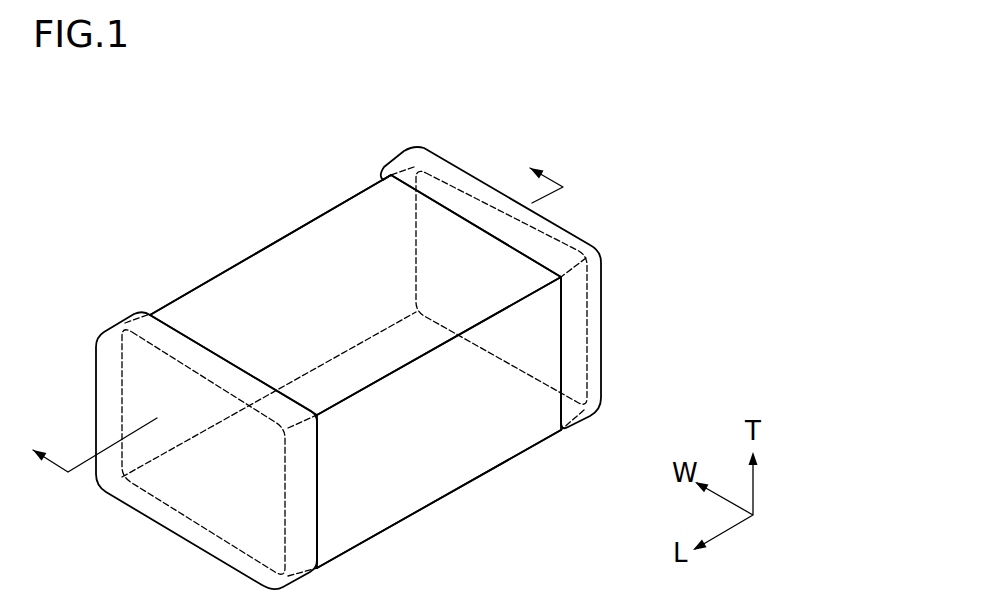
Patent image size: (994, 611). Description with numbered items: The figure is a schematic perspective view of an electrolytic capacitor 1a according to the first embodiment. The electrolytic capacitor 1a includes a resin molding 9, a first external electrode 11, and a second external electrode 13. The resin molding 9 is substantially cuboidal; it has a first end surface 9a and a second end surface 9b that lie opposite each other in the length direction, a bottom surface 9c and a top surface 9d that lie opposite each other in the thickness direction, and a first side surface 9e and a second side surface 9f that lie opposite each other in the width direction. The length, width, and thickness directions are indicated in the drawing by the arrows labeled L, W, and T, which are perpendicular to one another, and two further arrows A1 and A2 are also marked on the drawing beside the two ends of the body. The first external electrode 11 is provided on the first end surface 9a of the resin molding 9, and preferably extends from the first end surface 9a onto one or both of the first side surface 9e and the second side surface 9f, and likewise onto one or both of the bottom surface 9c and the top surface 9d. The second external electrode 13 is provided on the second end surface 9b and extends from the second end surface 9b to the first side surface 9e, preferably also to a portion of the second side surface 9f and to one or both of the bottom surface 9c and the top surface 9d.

The electrolytic capacitor 1a is at (88, 186).
The resin molding 9 is at (372, 223).
The first end surface 9a is at (547, 313).
The second end surface 9b is at (195, 497).
The bottom surface 9c is at (392, 498).
The top surface 9d is at (320, 240).
The first side surface 9e is at (465, 455).
The second side surface 9f is at (233, 305).
The first external electrode 11 is at (566, 241).
The second external electrode 13 is at (104, 368).
The direction arrow A1 is at (95, 463).
The direction arrow A2 is at (568, 178).